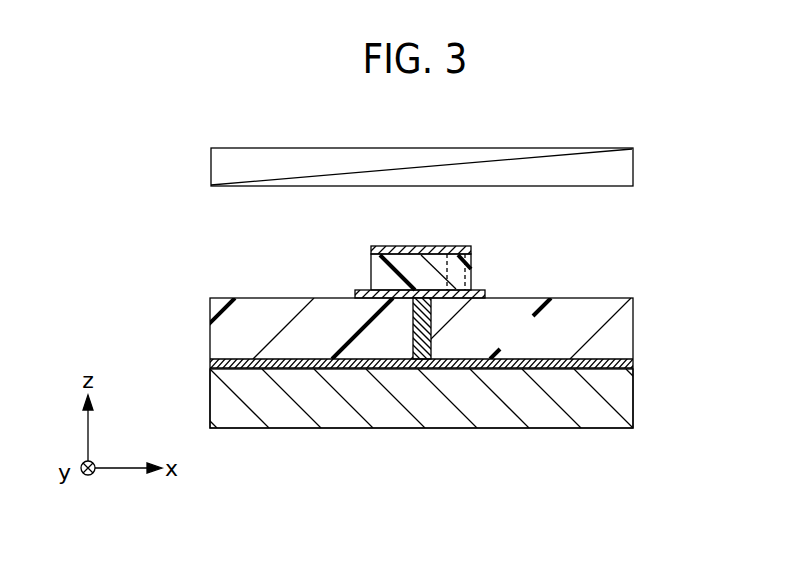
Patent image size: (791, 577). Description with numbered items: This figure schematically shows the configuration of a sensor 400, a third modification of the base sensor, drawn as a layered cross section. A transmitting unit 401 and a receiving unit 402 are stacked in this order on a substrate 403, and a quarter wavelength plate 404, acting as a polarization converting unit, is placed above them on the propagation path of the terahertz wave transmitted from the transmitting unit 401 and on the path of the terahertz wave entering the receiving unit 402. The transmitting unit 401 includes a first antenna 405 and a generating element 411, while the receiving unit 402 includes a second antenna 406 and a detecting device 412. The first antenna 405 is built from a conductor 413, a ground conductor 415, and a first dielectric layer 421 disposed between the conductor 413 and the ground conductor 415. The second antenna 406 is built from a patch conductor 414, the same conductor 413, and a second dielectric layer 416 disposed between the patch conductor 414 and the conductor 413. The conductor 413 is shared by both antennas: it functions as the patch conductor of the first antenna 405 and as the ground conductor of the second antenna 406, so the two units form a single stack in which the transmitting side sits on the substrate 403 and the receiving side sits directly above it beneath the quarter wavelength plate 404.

The sensor 400 is at (420, 336).
The transmitting unit 401 is at (420, 393).
The receiving unit 402 is at (343, 345).
The substrate 403 is at (618, 404).
The quarter wavelength plate 404 is at (620, 167).
The first antenna 405 is at (500, 298).
The second antenna 406 is at (421, 250).
The generating element 411 is at (423, 347).
The detecting device 412 is at (457, 274).
The conductor 413 is at (367, 300).
The patch conductor 414 is at (453, 247).
The ground conductor 415 is at (575, 368).
The second dielectric layer 416 is at (392, 262).
The first dielectric layer 421 is at (618, 331).